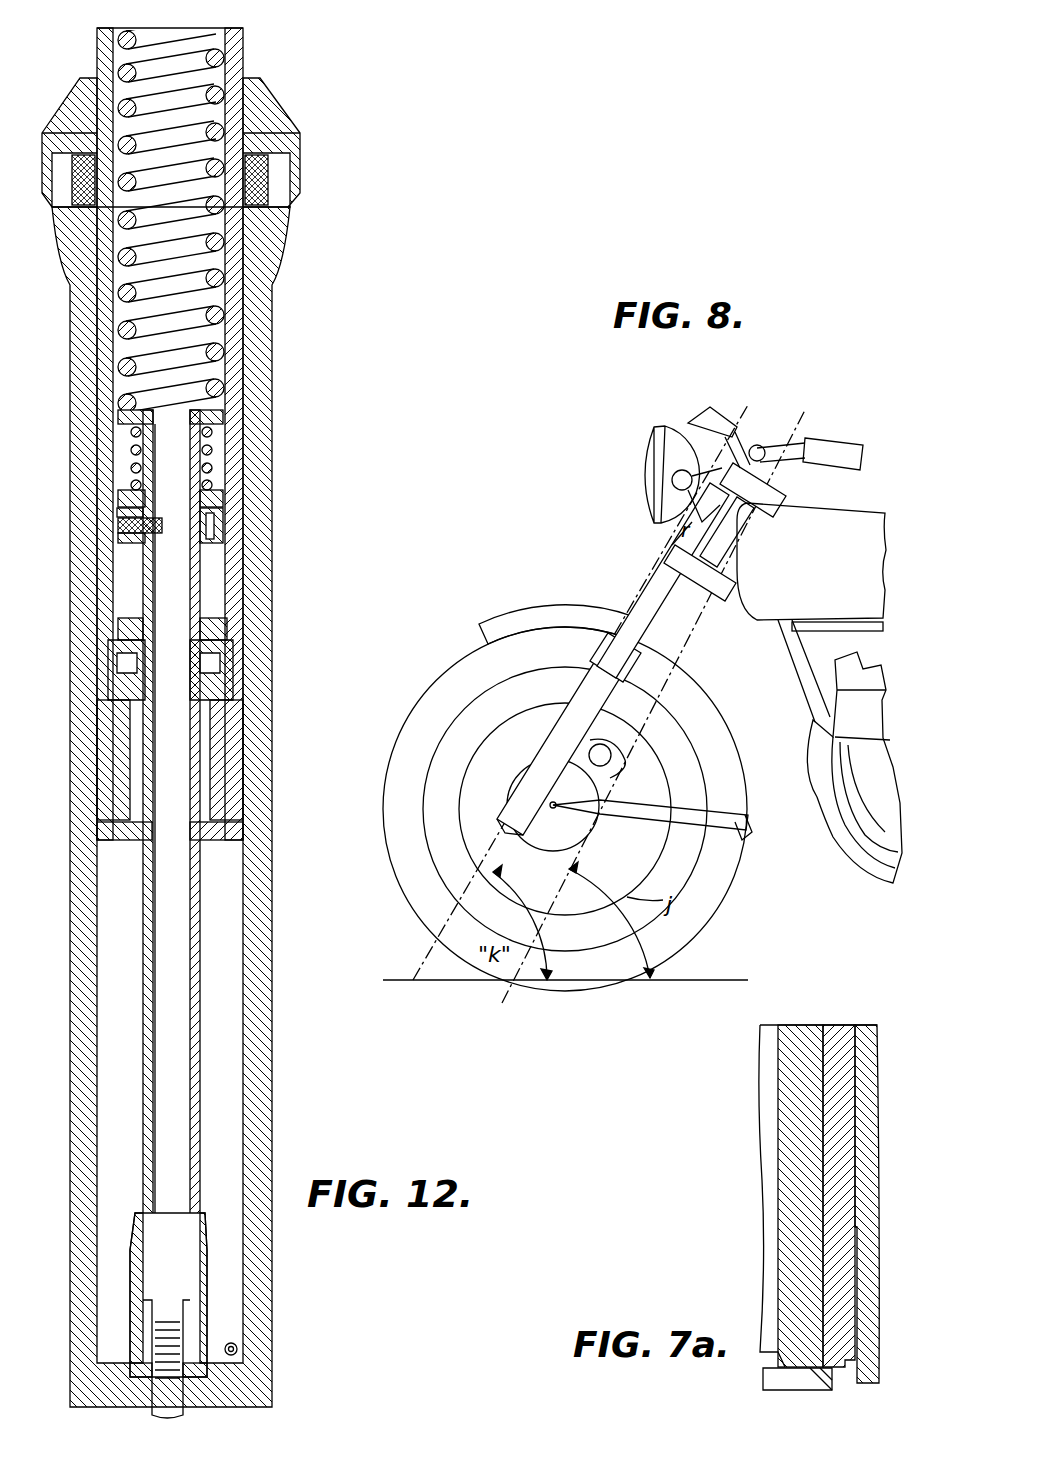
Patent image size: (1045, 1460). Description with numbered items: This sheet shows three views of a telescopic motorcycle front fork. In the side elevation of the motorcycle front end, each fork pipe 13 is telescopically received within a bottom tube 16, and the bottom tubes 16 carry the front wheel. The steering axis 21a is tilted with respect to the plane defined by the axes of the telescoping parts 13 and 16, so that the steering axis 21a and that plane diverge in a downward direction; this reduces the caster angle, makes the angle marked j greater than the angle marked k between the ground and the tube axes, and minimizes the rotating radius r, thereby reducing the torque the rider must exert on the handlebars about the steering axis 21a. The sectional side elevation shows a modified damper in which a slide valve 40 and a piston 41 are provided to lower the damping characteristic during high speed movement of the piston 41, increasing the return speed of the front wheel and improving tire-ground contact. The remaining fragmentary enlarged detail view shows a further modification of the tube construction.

In FIG. 12, the slide valve 40 is at (223, 498).
In FIG. 12, the piston 41 is at (212, 543).
In FIG. 8, the fork pipe 13 is at (658, 587).
In FIG. 8, the bottom tube 16 is at (610, 667).
In FIG. 8, the steering axis 21a is at (690, 638).